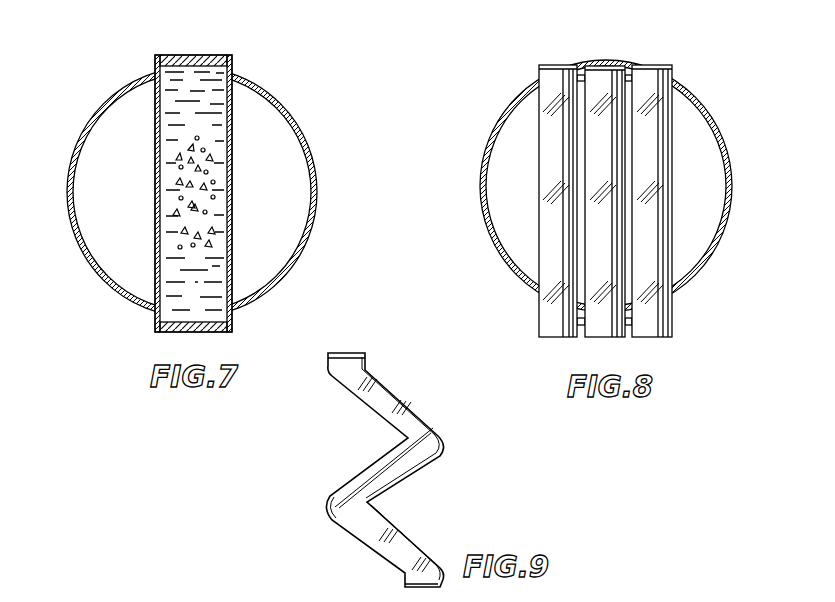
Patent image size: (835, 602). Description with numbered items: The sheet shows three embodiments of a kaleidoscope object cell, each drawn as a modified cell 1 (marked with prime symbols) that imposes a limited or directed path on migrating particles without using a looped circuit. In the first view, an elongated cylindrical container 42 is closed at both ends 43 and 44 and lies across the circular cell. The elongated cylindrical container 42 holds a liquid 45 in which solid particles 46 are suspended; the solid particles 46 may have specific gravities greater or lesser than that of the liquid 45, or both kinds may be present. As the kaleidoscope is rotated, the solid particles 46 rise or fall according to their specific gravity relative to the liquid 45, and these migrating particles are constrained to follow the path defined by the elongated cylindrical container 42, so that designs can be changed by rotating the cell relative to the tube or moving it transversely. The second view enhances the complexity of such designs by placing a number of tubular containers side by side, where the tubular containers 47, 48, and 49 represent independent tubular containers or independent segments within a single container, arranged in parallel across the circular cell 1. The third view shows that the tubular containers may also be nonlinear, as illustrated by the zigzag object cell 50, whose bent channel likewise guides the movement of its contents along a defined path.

In FIG. 7, the device (modified embodiments 1'' and 1''') 1 is at (97, 103).
In FIG. 8, the device (modified embodiments 1'' and 1''') 1 is at (724, 157).
In FIG. 7, the elongated cylindrical container 42 is at (232, 154).
In FIG. 7, the closed end 43 is at (221, 56).
In FIG. 7, the closed end 44 is at (170, 333).
In FIG. 7, the liquid 45 is at (208, 273).
In FIG. 7, the solid particles 46 is at (187, 185).
In FIG. 8, the tubular container 47 is at (545, 78).
In FIG. 8, the tubular container 48 is at (600, 81).
In FIG. 8, the tubular container 49 is at (658, 87).
In FIG. 9, the object cell 50 is at (432, 428).